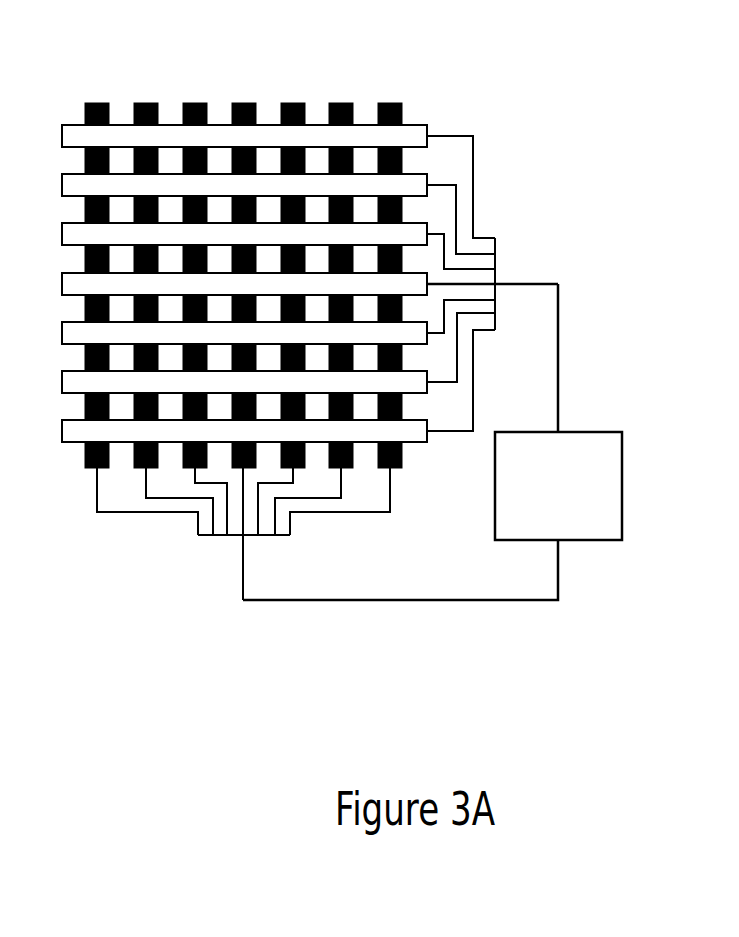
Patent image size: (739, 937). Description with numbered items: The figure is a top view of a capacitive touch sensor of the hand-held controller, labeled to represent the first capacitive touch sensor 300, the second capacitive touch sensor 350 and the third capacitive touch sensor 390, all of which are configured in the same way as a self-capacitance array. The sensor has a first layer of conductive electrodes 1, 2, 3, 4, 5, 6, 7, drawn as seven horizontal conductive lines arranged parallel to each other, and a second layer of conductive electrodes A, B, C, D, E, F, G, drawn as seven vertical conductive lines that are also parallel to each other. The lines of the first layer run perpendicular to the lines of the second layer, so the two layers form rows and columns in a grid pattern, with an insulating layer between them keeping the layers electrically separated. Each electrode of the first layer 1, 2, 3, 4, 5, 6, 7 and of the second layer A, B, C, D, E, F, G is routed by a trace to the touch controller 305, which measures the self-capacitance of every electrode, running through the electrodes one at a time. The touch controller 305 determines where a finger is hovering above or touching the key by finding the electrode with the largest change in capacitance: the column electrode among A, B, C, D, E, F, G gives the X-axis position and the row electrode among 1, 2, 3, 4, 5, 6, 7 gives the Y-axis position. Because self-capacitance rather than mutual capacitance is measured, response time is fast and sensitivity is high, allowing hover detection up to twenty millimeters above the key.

The first capacitive touch sensor 300 is at (314, 57).
The second capacitive touch sensor 350 is at (298, 306).
The third capacitive touch sensor 390 is at (298, 306).
The touch controller 305 is at (432, 442).
The conductive electrode of the first layer 1 is at (62, 137).
The conductive electrode of the first layer 2 is at (62, 186).
The conductive electrode of the first layer 3 is at (62, 235).
The conductive electrode of the first layer 4 is at (62, 285).
The conductive electrode of the first layer 5 is at (62, 334).
The conductive electrode of the first layer 6 is at (62, 383).
The conductive electrode of the first layer 7 is at (62, 432).
The conductive electrode of the second layer A is at (92, 102).
The conductive electrode of the second layer B is at (141, 102).
The conductive electrode of the second layer C is at (190, 102).
The conductive electrode of the second layer D is at (239, 102).
The conductive electrode of the second layer E is at (288, 102).
The conductive electrode of the second layer F is at (336, 102).
The conductive electrode of the second layer G is at (385, 102).